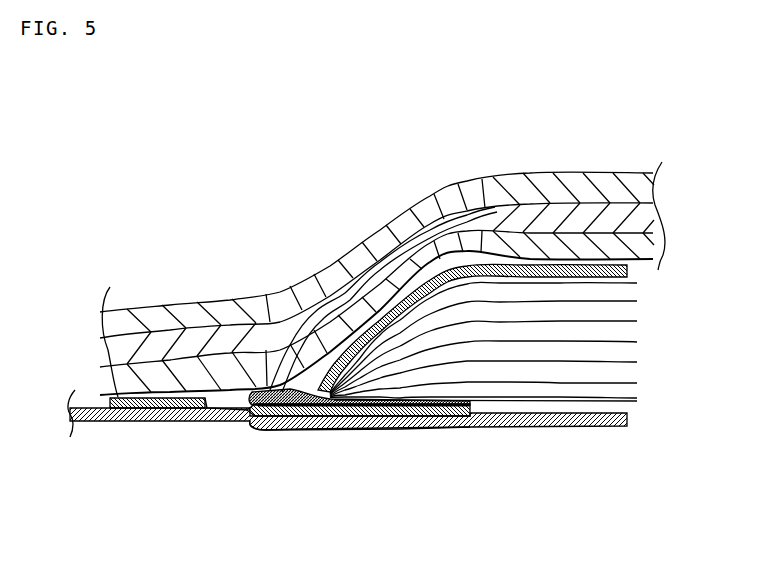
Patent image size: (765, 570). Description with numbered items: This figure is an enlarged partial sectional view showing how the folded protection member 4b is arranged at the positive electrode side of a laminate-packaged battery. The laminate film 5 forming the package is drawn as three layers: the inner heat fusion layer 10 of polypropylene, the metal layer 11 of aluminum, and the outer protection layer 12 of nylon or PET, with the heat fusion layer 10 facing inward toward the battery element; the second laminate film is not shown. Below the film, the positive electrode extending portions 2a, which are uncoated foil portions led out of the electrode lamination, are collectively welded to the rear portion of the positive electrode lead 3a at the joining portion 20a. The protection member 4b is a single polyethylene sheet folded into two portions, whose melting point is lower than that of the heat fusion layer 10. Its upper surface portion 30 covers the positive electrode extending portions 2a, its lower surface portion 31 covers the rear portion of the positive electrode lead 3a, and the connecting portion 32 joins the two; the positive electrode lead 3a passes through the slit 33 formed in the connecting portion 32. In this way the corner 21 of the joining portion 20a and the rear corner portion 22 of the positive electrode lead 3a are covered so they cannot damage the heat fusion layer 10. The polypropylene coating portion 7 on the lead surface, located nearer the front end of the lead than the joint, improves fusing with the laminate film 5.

The laminate film 5 is at (442, 169).
The heat fusion layer 10 is at (130, 347).
The metal layer 11 is at (227, 343).
The protection layer 12 is at (290, 297).
The corner 21 is at (357, 268).
The upper surface portion 30 is at (628, 273).
The positive electrode extending portion 2a is at (633, 382).
The joining portion 20a is at (320, 430).
The rear corner portion 22 is at (498, 428).
The coating portion 7 is at (210, 425).
The lower surface portion 31 is at (627, 420).
The connecting portion 32 is at (270, 431).
The slit 33 is at (243, 425).
The positive electrode lead 3a is at (460, 428).
The protection member 4b is at (383, 450).